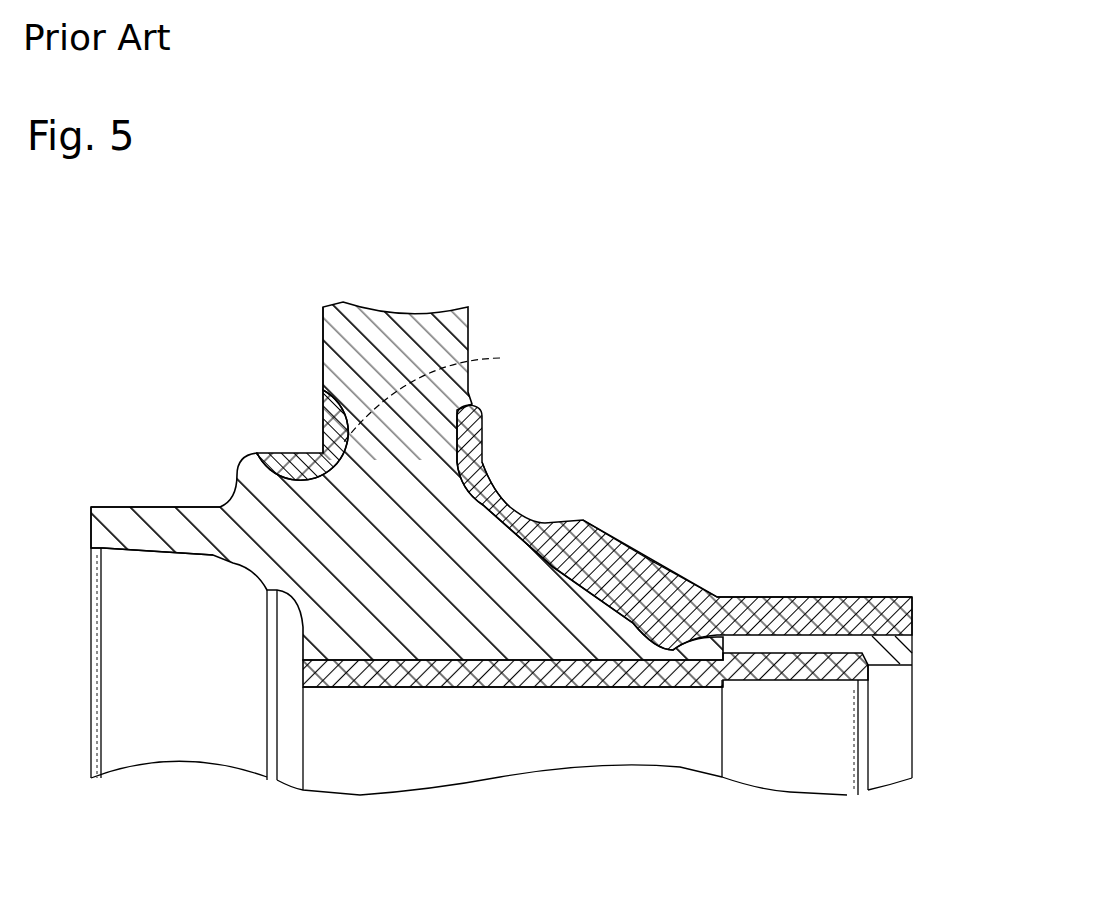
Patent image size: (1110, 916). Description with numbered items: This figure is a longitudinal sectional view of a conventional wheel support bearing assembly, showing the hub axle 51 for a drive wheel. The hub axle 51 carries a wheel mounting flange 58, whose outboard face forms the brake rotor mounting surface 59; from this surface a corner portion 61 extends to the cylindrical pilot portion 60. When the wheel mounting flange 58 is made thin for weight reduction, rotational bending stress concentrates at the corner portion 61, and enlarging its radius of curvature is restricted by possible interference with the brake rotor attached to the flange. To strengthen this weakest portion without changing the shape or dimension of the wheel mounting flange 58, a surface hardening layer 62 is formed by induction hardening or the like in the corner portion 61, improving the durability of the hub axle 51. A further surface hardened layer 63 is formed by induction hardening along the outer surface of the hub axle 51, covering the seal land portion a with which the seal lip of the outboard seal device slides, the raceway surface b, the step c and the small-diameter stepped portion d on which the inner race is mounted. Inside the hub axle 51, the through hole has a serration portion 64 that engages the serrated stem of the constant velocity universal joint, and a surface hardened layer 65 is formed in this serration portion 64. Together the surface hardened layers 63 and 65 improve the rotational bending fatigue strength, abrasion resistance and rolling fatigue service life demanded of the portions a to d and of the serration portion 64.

The hub axle 51 is at (82, 670).
The wheel mounting flange 58 is at (399, 332).
The brake rotor mounting surface 59 is at (307, 358).
The cylindrical pilot portion 60 is at (148, 530).
The corner portion 61 is at (307, 445).
The surface hardening layer 62 is at (492, 359).
The surface hardened layer 63 is at (577, 522).
The serration portion 64 is at (468, 690).
The surface hardened layer 65 is at (392, 688).
The seal land portion a is at (510, 497).
The raceway surface b is at (641, 570).
The step c is at (703, 592).
The small-diameter stepped portion d is at (803, 597).